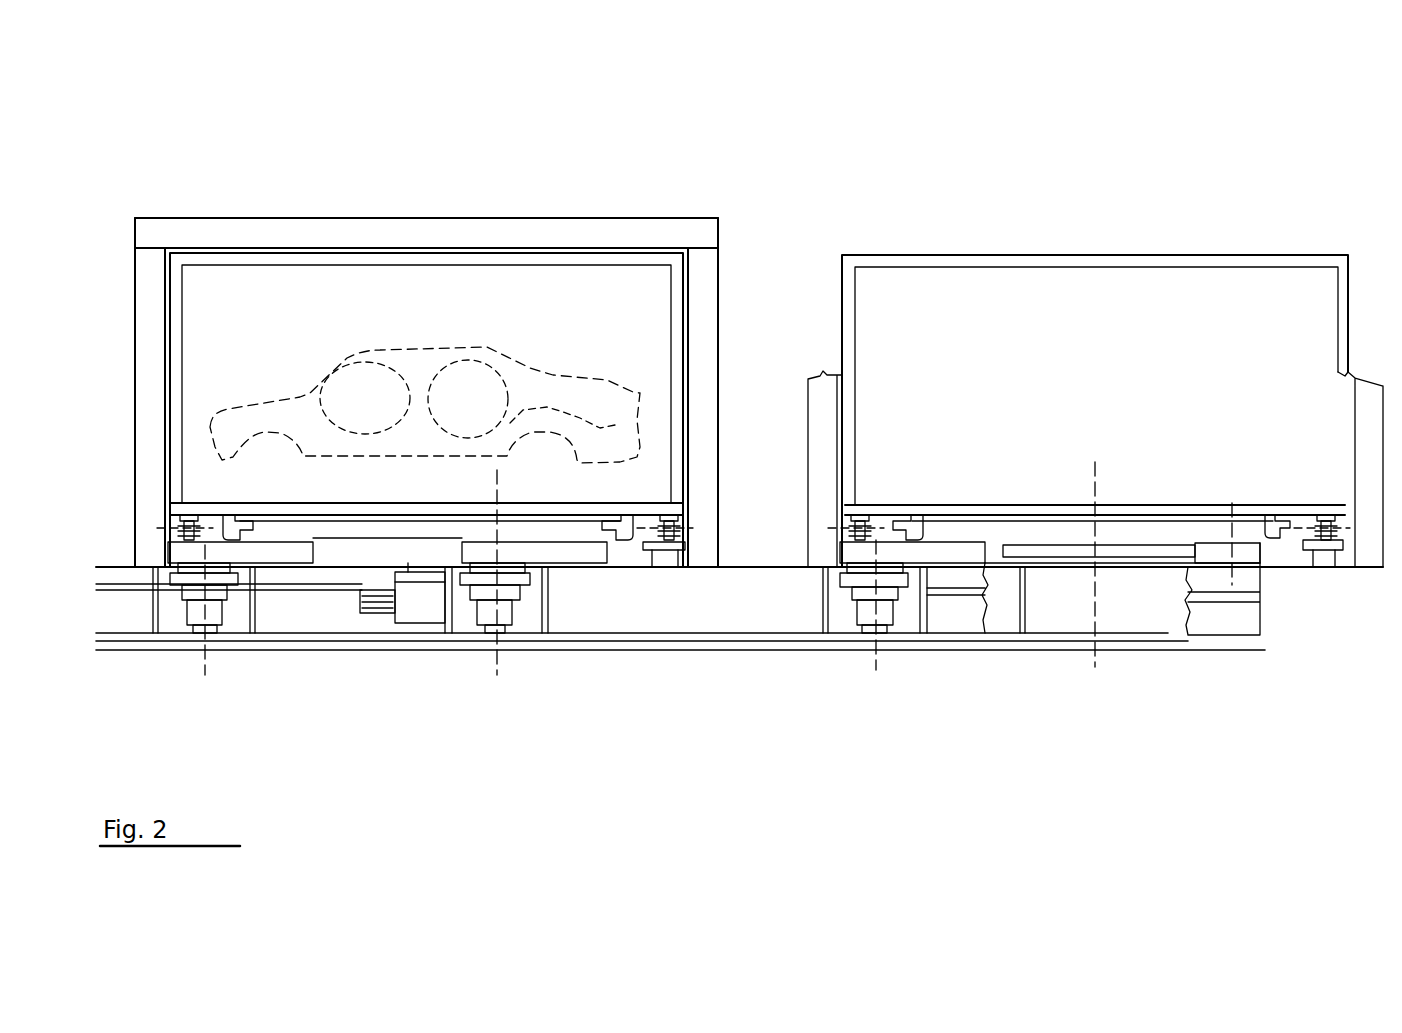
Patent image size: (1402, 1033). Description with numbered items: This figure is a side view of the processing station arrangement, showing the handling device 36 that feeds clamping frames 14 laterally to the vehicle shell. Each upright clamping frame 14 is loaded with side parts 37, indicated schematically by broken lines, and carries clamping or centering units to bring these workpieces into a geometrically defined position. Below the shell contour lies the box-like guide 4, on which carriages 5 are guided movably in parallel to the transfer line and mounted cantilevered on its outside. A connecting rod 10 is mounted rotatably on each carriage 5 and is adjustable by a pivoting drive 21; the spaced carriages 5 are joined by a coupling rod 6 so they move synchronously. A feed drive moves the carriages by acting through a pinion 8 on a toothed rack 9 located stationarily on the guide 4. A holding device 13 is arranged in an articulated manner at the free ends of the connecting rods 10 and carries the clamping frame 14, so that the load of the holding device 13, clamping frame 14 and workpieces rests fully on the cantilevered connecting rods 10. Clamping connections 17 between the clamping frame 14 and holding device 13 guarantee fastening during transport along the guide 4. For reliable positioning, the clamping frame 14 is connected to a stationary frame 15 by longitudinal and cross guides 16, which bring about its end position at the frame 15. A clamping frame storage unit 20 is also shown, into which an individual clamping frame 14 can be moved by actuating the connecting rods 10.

The handling device 36 is at (790, 213).
The side parts 37 is at (530, 368).
The stationary frame 15 is at (703, 398).
The clamping frame 14 is at (230, 508).
The clamping frame storage unit 20 is at (823, 370).
The guide 4 is at (768, 602).
The holding device 13 is at (335, 529).
The connecting rod 10 is at (275, 553).
The clamping connection 17 is at (235, 527).
The longitudinal and cross guides 16 is at (187, 562).
The pivoting drive 21 is at (210, 612).
The carriage 5 is at (168, 573).
The coupling rod 6 is at (372, 578).
The toothed rack 9 is at (407, 570).
The pinion 8 is at (440, 570).